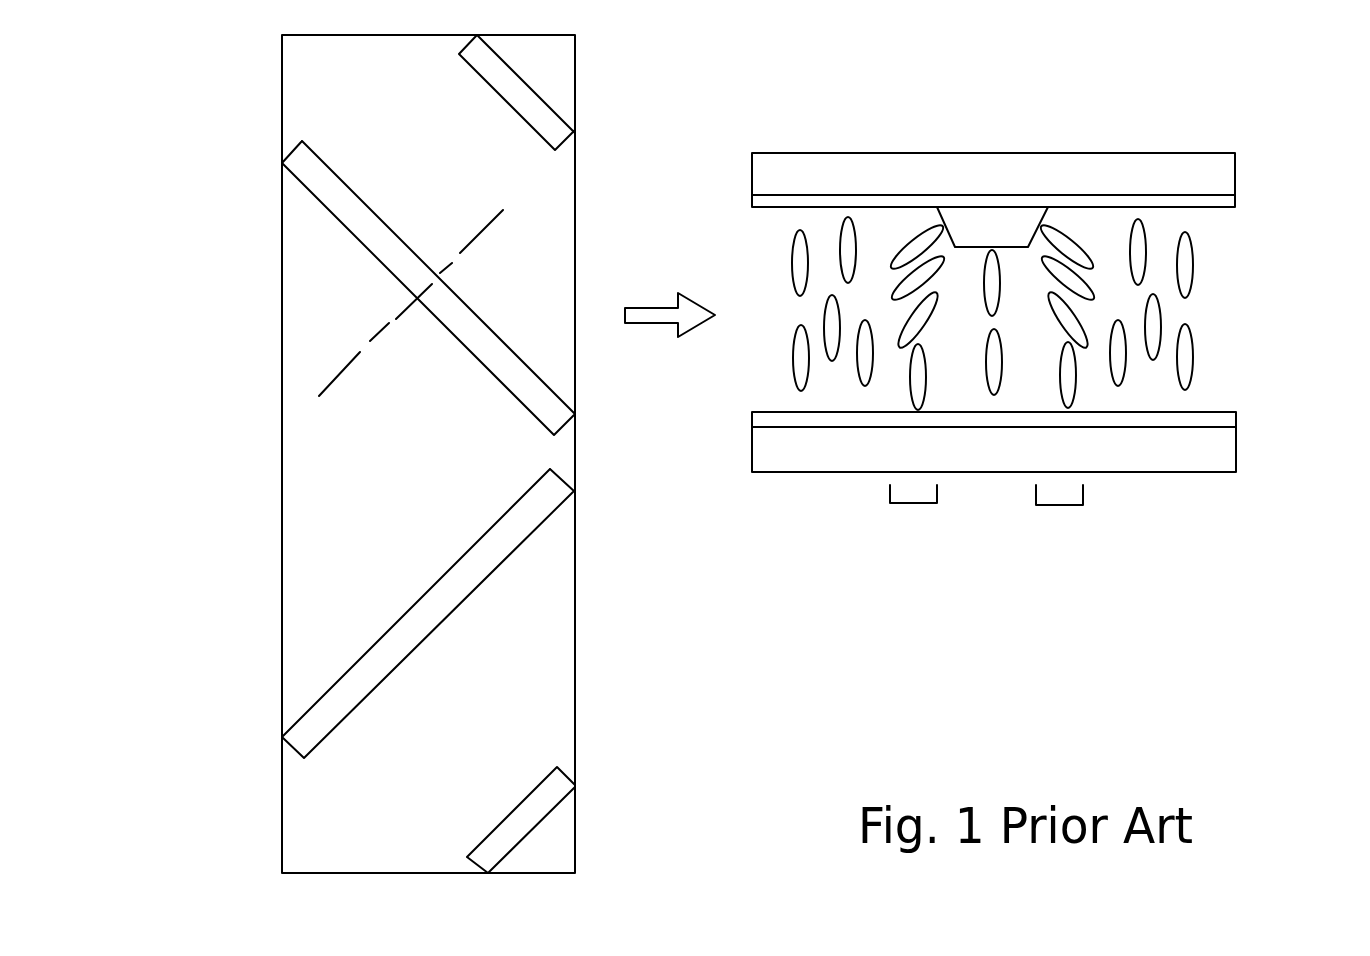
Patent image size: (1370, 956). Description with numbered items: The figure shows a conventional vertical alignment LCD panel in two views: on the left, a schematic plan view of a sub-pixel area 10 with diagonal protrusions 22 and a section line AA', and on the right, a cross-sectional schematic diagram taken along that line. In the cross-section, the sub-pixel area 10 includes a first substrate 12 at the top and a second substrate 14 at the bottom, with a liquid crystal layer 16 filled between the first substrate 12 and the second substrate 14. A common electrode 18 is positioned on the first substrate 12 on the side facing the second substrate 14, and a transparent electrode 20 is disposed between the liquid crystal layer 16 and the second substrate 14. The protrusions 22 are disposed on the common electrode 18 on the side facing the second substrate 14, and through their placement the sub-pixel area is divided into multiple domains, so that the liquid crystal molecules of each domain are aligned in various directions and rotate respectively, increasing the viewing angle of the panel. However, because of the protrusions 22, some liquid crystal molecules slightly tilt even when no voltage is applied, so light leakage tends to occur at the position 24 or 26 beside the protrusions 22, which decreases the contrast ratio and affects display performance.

The sub-pixel area 10 is at (242, 222).
The first substrate 12 is at (1225, 173).
The second substrate 14 is at (1227, 450).
The liquid crystal layer 16 is at (1188, 253).
The common electrode 18 is at (1228, 198).
The transparent electrode 20 is at (1230, 420).
The protrusions 22 is at (508, 375).
The position of light leakage 24 is at (913, 512).
The position of light leakage 26 is at (1063, 512).